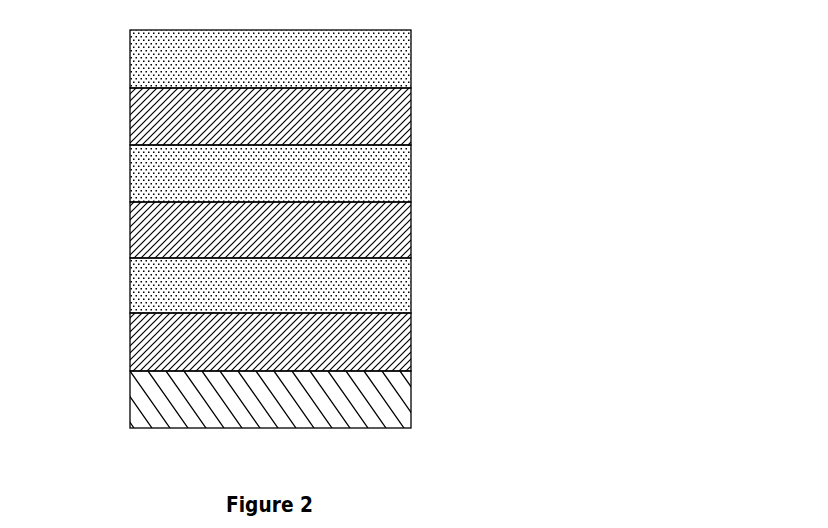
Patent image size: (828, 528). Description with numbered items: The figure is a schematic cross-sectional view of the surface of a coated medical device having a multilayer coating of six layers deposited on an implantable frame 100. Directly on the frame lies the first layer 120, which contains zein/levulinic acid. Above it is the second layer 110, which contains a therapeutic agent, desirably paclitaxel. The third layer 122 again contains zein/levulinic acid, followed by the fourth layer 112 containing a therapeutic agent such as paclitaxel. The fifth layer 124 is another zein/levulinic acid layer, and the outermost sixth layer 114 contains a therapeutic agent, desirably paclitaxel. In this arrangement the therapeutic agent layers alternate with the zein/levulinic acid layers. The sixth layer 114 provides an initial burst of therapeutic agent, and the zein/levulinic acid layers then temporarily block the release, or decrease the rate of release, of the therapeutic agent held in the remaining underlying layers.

The implantable frame 100 is at (128, 400).
The second layer 110 is at (128, 287).
The fourth layer 112 is at (128, 175).
The sixth layer 114 is at (128, 60).
The first layer 120 is at (411, 343).
The third layer 122 is at (411, 228).
The fifth layer 124 is at (411, 117).